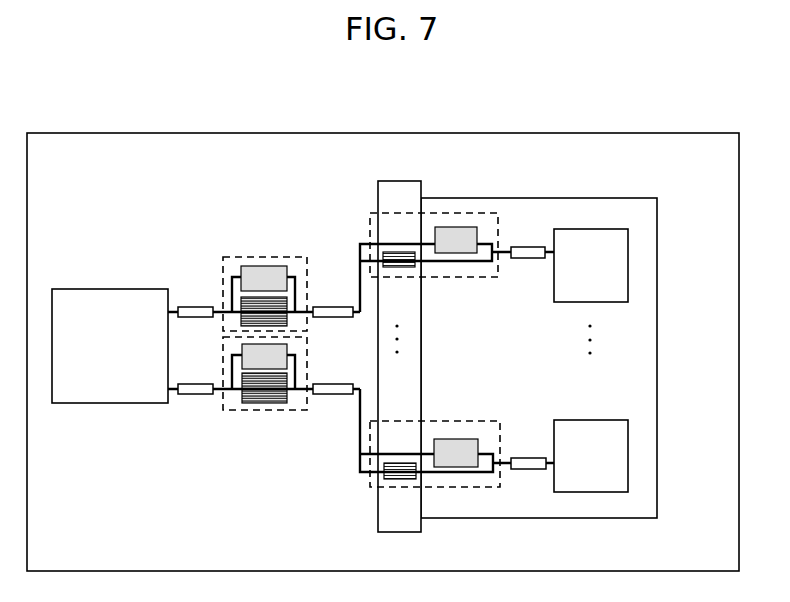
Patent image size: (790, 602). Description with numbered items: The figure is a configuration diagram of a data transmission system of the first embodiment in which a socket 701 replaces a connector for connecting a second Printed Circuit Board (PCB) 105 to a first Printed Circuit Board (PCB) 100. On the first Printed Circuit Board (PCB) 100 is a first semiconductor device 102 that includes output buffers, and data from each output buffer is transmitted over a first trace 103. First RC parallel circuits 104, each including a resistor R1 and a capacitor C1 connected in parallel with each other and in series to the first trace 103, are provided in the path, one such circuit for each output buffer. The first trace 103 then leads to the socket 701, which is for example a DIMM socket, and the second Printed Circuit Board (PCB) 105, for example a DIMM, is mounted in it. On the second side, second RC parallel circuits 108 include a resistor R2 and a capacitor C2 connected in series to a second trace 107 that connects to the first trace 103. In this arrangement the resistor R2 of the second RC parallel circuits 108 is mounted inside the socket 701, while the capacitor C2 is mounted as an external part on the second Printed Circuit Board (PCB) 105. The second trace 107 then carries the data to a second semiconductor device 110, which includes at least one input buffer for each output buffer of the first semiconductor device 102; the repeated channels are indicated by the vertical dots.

The first Printed Circuit Board (PCB) 100 is at (696, 131).
The first semiconductor device 102 is at (92, 289).
The first trace 103 is at (197, 307).
The first RC parallel circuits 104 is at (261, 311).
The second Printed Circuit Board (PCB) 105 is at (577, 197).
The second trace 107 is at (521, 260).
The second RC parallel circuits 108 is at (452, 327).
The second semiconductor device 110 is at (614, 303).
The socket 701 is at (421, 188).
The capacitor C1 is at (263, 258).
The resistor R1 is at (235, 350).
The capacitor C2 is at (478, 233).
The resistor R2 is at (408, 268).